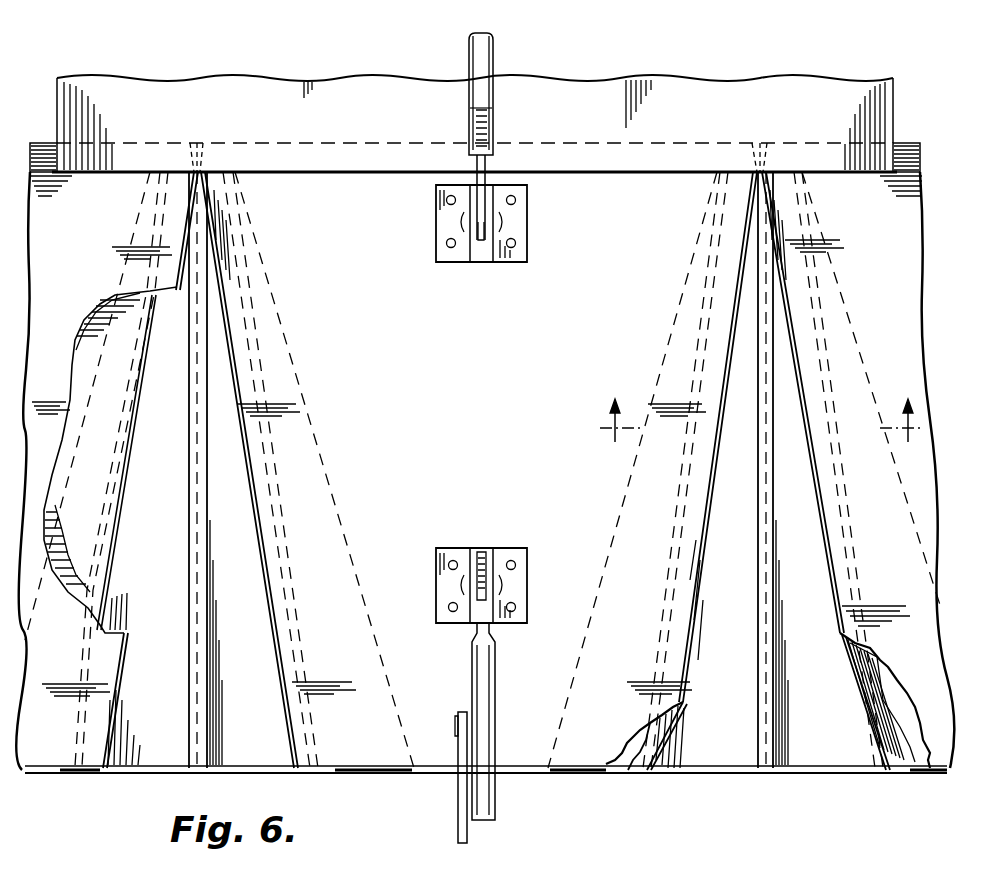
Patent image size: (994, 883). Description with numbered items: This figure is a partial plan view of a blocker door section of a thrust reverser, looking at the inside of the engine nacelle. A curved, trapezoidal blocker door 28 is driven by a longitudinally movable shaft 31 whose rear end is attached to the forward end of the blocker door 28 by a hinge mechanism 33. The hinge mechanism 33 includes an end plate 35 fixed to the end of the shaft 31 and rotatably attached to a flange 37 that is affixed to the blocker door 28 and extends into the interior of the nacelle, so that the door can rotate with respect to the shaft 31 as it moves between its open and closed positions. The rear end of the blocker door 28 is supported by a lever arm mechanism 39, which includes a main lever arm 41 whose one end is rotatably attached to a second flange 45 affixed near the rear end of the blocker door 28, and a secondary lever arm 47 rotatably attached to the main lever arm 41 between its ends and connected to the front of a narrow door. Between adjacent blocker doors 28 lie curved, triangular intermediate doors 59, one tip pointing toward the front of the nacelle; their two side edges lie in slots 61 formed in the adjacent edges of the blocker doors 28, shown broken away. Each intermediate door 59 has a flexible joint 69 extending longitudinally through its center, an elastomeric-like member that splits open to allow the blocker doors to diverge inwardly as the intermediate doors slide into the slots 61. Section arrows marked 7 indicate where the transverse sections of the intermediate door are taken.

The section line of FIG. 7 is at (757, 431).
The blocker door 28 is at (52, 752).
The longitudinally movable shaft 31 is at (494, 48).
The hinge mechanism 33 is at (480, 169).
The end plate 35 is at (476, 176).
The flange 37 is at (530, 222).
The lever arm mechanism 39 is at (483, 673).
The main lever arm 41 is at (484, 676).
The second flange 45 is at (527, 555).
The secondary lever arm 47 is at (457, 798).
The intermediate door 59 is at (140, 745).
The slot 61 is at (138, 320).
The flexible joint 69 is at (189, 512).